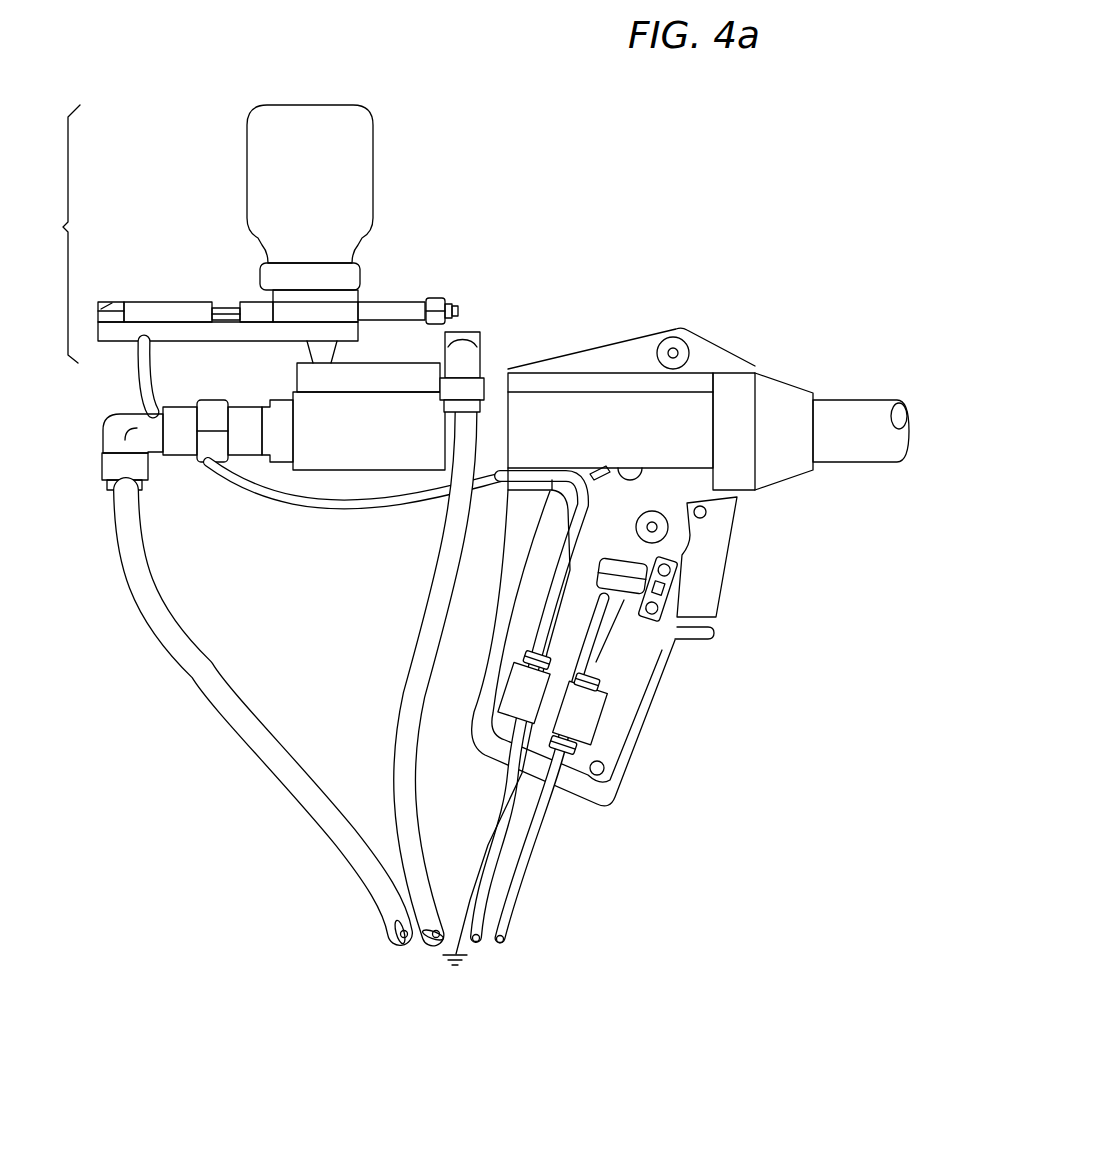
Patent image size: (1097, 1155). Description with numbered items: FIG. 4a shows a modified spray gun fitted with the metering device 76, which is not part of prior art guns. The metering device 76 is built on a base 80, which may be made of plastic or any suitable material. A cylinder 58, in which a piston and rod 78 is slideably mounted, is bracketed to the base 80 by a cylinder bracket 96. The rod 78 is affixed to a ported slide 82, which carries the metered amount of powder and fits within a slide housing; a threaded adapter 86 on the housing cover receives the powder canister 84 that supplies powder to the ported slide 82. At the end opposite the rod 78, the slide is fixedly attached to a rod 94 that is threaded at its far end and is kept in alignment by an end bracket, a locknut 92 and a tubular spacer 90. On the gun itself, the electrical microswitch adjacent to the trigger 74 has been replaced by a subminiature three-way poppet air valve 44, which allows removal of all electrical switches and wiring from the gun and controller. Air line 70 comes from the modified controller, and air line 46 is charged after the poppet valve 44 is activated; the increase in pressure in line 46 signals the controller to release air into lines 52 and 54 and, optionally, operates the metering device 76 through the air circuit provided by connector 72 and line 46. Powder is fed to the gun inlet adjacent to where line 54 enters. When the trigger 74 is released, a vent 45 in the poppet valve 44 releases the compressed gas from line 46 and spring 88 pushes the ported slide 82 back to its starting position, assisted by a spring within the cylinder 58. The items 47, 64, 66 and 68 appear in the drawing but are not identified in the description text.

The subminiature three-way poppet air valve 44 is at (618, 560).
The vent 45 is at (683, 587).
The air line 46 is at (293, 503).
The hose 47 is at (487, 842).
The line 52 is at (425, 627).
The line 54 is at (210, 698).
The cylinder 58 is at (133, 304).
The funnel connector 64 is at (342, 357).
The spray gun 66 is at (858, 398).
The valve body 68 is at (308, 407).
The air line 70 is at (487, 888).
The connector 72 is at (583, 728).
The trigger 74 is at (722, 557).
The metering device 76 is at (55, 234).
The piston and rod 78 is at (223, 306).
The base 80 is at (122, 335).
The ported slide 82 is at (247, 303).
The powder canister 84 is at (373, 160).
The threaded adapter 86 is at (360, 277).
The spring 88 is at (400, 302).
The tubular spacer 90 is at (433, 300).
The locknut 92 is at (447, 301).
The rod 94 is at (458, 311).
The cylinder bracket 96 is at (102, 316).